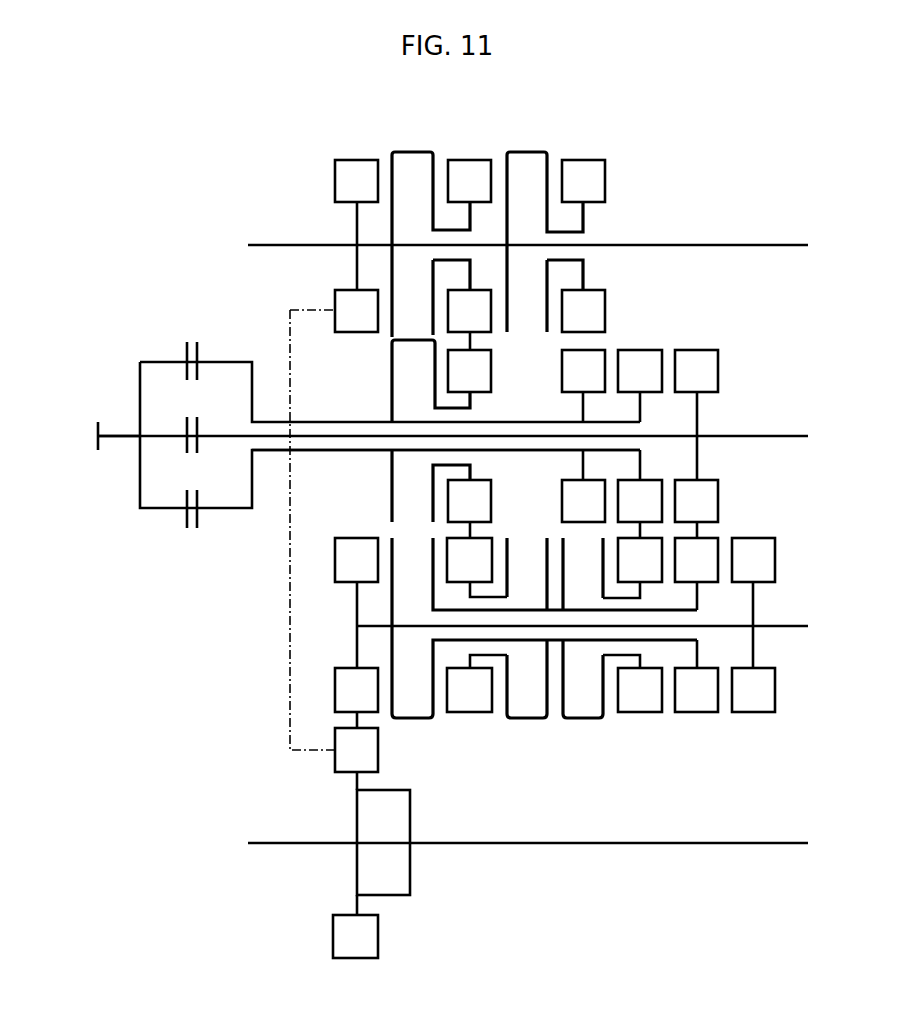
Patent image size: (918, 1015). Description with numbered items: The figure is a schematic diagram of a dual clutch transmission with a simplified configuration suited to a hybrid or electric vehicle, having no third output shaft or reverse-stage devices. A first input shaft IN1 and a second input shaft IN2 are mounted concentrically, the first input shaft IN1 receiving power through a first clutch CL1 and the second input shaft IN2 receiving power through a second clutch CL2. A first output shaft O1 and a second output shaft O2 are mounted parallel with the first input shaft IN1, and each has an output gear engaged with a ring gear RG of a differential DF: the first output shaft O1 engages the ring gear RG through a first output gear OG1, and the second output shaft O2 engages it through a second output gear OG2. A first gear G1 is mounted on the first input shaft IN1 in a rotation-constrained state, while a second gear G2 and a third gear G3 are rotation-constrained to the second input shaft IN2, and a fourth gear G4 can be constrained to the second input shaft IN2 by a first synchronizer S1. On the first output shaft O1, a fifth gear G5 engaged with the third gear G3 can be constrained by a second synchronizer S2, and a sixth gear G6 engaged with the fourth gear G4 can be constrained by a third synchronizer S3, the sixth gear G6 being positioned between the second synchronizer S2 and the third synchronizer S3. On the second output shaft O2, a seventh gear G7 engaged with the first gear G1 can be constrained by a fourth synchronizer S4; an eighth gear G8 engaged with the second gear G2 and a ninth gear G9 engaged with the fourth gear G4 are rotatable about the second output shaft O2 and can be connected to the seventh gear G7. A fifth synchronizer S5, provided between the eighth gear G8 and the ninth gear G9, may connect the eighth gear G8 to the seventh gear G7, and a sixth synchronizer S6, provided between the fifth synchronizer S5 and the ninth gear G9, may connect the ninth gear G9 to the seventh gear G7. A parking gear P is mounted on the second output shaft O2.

The first output gear OG1 is at (335, 180).
The first output shaft O1 is at (250, 245).
The third synchronizer S3 is at (412, 152).
The sixth gear G6 is at (470, 160).
The second synchronizer S2 is at (527, 152).
The fifth gear G5 is at (583, 160).
The second clutch CL2 is at (192, 340).
The first clutch CL1 is at (187, 417).
The first synchronizer S1 is at (412, 340).
The fourth gear G4 is at (492, 370).
The third gear G3 is at (603, 350).
The second gear G2 is at (650, 350).
The first gear G1 is at (697, 350).
The first input shaft IN1 is at (733, 436).
The second input shaft IN2 is at (640, 450).
The second output gear OG2 is at (348, 538).
The second output shaft O2 is at (775, 625).
The fourth synchronizer S4 is at (412, 720).
The ninth gear G9 is at (470, 712).
The sixth synchronizer S6 is at (527, 720).
The fifth synchronizer S5 is at (583, 720).
The eighth gear G8 is at (640, 712).
The seventh gear G7 is at (697, 712).
The parking gear P is at (753, 712).
The differential DF is at (410, 875).
The ring gear RG is at (378, 935).